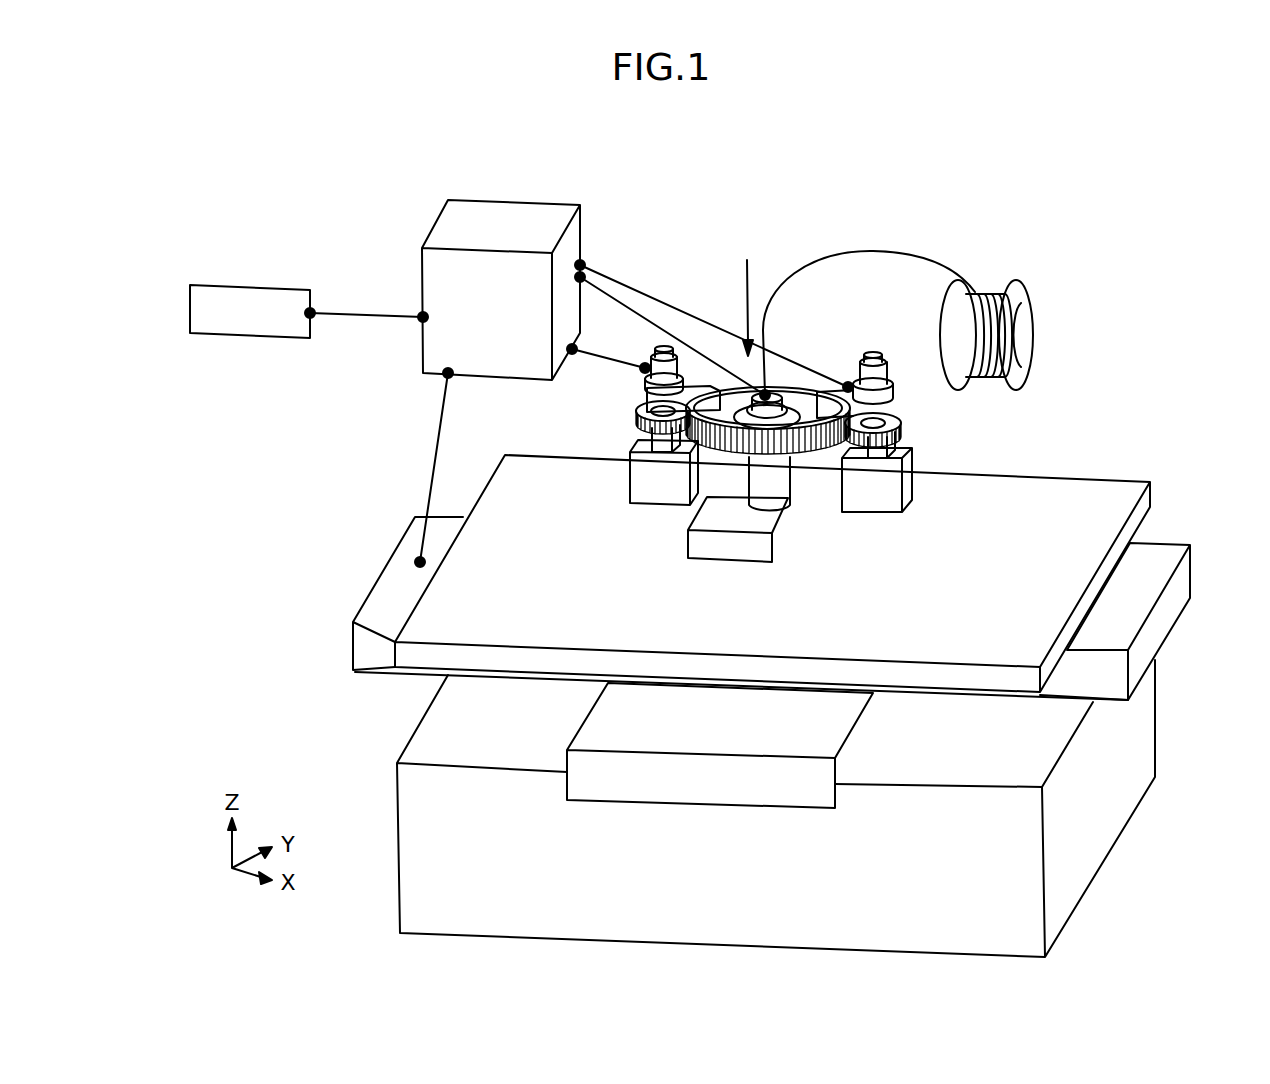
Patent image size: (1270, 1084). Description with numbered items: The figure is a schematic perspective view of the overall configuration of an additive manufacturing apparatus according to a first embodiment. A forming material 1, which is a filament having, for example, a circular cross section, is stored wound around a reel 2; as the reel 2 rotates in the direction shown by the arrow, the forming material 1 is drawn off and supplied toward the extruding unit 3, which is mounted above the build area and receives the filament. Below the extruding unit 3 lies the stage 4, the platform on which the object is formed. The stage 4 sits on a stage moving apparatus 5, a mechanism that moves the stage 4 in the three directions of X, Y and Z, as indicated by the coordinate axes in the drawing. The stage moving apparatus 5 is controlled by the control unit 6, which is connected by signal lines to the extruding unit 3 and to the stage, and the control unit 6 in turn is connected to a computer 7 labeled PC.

The forming material 1 is at (922, 252).
The reel 2 is at (1034, 310).
The extruding unit 3 is at (932, 423).
The stage 4 is at (1090, 590).
The stage moving apparatus 5 is at (865, 735).
The control unit 6 is at (575, 235).
The computer 7 is at (260, 283).